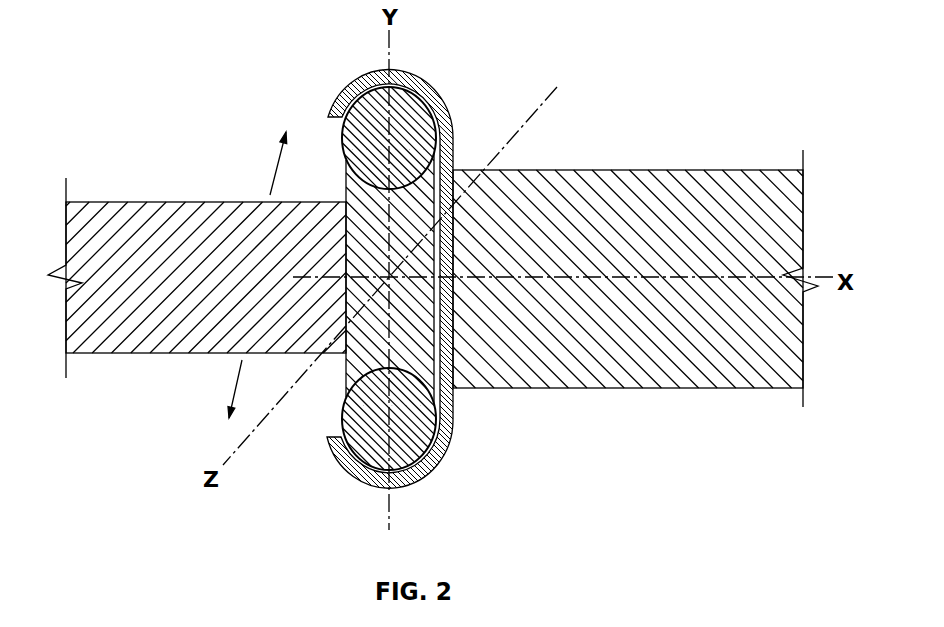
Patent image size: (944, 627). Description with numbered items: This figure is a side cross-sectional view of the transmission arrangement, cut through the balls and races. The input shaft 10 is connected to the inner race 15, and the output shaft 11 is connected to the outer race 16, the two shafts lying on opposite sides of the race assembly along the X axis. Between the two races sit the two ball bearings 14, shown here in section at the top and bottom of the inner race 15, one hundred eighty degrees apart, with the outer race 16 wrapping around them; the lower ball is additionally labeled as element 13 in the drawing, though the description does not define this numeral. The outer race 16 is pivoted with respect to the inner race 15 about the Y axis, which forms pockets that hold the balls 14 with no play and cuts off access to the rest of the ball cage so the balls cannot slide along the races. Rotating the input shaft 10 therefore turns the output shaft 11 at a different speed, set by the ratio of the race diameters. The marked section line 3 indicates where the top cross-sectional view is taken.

The input shaft 10 is at (178, 202).
The output shaft 11 is at (560, 170).
The lower bead 13 is at (408, 445).
The ball bearings 14 is at (378, 93).
The inner race 15 is at (346, 380).
The outer race 16 is at (454, 138).
The section line for FIG. 3 is at (258, 275).